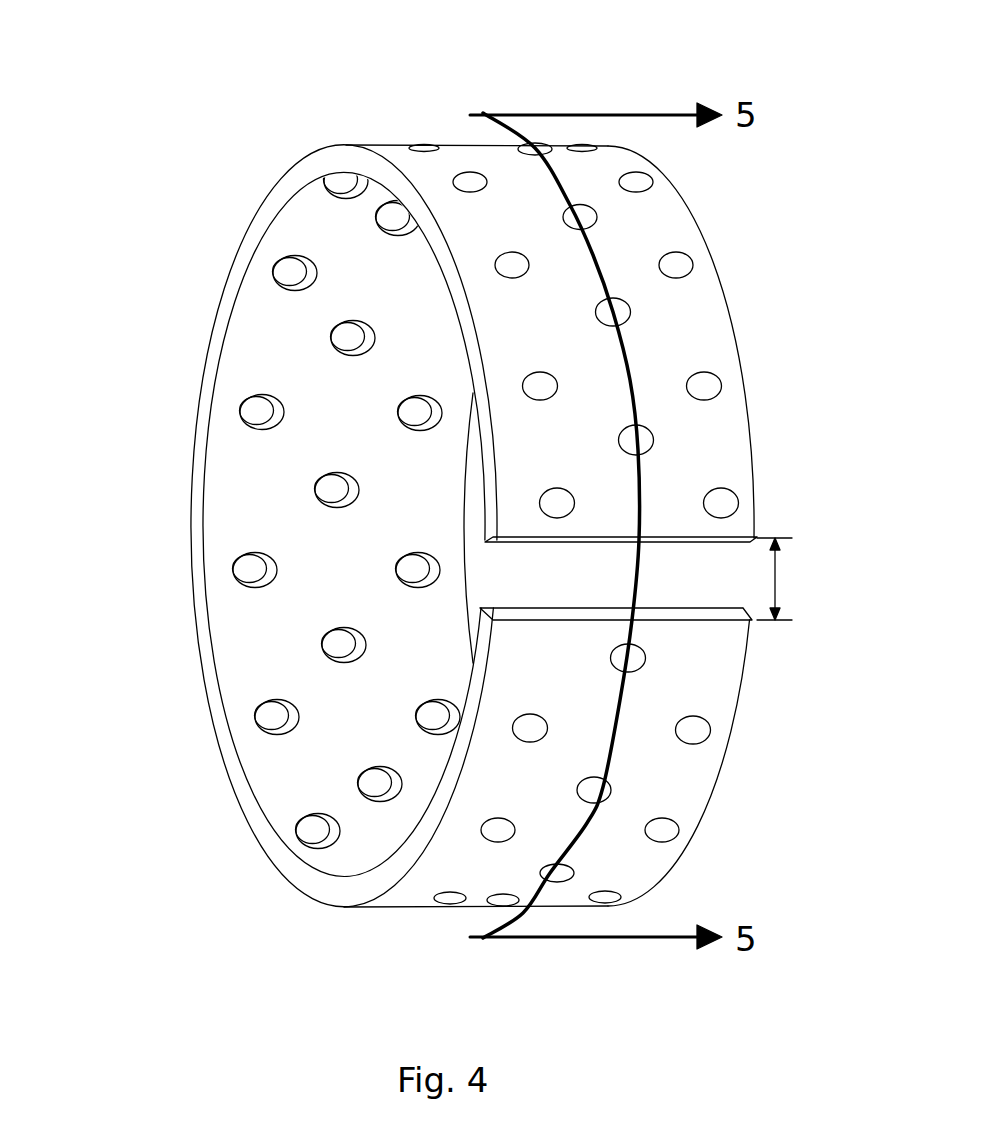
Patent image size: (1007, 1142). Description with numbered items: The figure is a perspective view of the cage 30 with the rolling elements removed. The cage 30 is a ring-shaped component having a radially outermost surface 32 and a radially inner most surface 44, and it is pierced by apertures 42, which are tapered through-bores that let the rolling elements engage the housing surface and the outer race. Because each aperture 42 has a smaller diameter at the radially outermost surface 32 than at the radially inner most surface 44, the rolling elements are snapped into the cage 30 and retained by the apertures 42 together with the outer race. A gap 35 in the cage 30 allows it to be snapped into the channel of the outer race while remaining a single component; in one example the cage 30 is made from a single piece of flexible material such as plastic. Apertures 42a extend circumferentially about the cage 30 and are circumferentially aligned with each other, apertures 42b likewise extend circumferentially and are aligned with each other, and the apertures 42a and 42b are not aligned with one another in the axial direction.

The cage 30 is at (709, 336).
The radially outermost surface 32 is at (695, 658).
The gap 35 is at (778, 580).
The apertures 42 is at (403, 584).
The apertures 42a is at (470, 180).
The apertures 42b is at (616, 305).
The radially inner most surface 44 is at (293, 775).